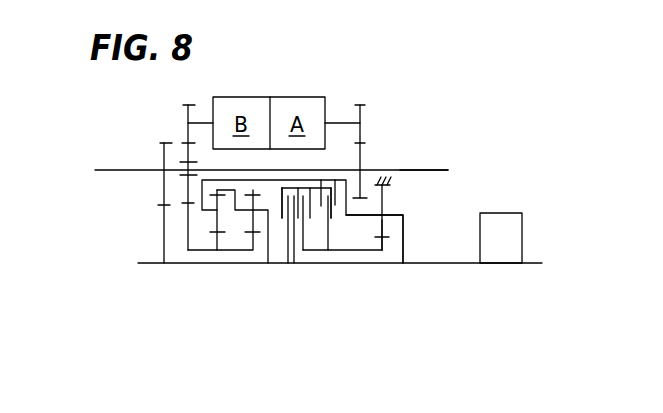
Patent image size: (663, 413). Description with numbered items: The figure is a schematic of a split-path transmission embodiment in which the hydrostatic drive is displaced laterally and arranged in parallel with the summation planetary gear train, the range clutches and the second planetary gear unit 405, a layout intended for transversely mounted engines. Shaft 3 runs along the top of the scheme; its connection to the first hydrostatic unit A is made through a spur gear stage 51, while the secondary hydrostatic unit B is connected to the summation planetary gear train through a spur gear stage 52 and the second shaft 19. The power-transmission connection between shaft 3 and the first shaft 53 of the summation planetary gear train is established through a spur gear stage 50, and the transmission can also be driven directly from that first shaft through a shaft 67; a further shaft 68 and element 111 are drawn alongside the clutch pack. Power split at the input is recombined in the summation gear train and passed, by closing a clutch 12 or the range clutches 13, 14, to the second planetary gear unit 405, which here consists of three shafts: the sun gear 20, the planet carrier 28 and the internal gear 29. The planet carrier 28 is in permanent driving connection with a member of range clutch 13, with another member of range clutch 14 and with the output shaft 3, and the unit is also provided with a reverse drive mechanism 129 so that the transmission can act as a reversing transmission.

The output shaft 3 is at (125, 170).
The clutch 12 is at (297, 263).
The range clutch 13 is at (343, 208).
The range clutch 14 is at (283, 220).
The second shaft 19 is at (205, 251).
The sun gear 20 is at (383, 248).
The planet carrier 28 is at (404, 220).
The internal gear 29 is at (385, 188).
The spur gear stage 50 is at (163, 199).
The spur gear stage 51 is at (362, 160).
The spur gear stage 52 is at (188, 220).
The first shaft 53 is at (237, 263).
The shaft 67 is at (148, 265).
The shaft 68 is at (416, 170).
The clutch plate 111 is at (331, 210).
The reverse drive mechanism 129 is at (503, 250).
The second planetary gear unit 405 is at (391, 228).